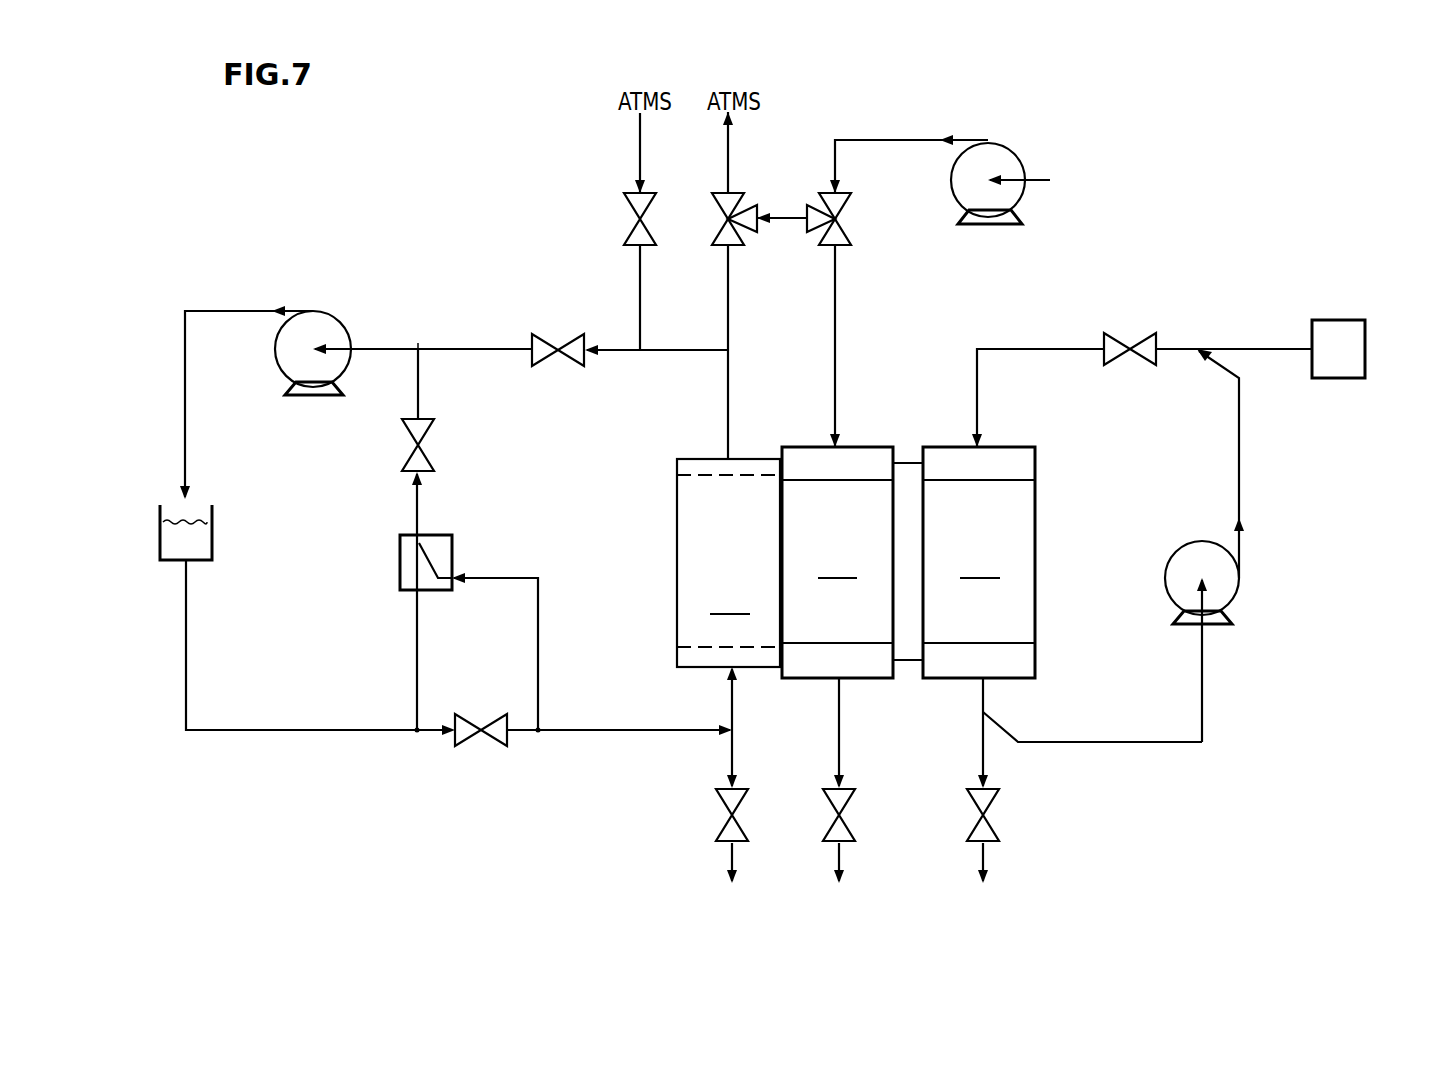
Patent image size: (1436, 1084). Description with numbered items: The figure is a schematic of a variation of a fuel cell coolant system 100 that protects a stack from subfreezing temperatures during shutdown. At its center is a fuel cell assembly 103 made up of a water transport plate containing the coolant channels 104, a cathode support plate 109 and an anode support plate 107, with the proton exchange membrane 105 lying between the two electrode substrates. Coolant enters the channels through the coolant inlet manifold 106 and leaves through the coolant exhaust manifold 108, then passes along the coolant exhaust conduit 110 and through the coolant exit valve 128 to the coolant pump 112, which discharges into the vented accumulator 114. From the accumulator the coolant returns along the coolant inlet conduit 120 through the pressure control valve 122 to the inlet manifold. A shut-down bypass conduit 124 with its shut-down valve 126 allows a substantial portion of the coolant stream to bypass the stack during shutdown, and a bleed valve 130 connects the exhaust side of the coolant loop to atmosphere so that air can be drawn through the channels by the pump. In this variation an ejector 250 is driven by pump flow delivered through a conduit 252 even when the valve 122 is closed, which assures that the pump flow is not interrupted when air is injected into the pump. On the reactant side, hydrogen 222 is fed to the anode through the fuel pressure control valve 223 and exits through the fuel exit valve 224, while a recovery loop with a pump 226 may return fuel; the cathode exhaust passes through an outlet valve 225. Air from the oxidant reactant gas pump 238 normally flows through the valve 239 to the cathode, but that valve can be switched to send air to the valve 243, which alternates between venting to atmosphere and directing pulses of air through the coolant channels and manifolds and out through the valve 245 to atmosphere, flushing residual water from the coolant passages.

The coolant system 100 is at (548, 158).
The fuel cell assembly 103 is at (866, 430).
The coolant channels 104 is at (728, 563).
The proton exchange membrane 105 is at (900, 470).
The coolant inlet manifold 106 is at (677, 657).
The anode support plate 107 is at (979, 562).
The coolant exhaust manifold 108 is at (677, 470).
The cathode support plate 109 is at (837, 562).
The coolant exhaust conduit 110 is at (660, 348).
The coolant pump 112 is at (335, 318).
The vented accumulator 114 is at (213, 538).
The coolant inlet conduit 120 is at (598, 734).
The pressure control valve 122 is at (483, 735).
The shut-down bypass conduit 124 is at (538, 680).
The shut-down valve 126 is at (410, 433).
The coolant exit valve 128 is at (560, 334).
The bleed valve 130 is at (650, 217).
The hydrogen 222 is at (1332, 320).
The fuel pressure control valve 223 is at (1130, 356).
The fuel exit valve 224 is at (975, 805).
The oxidant outlet valve 225 is at (830, 805).
The fuel recovery loop pump 226 is at (1228, 587).
The oxidant reactant gas pump 238 is at (990, 143).
The air diverter valve 239 is at (847, 218).
The alternating air valve 243 is at (747, 206).
The coolant channel vent valve 245 is at (722, 805).
The ejector 250 is at (440, 535).
The conduit 252 is at (417, 630).